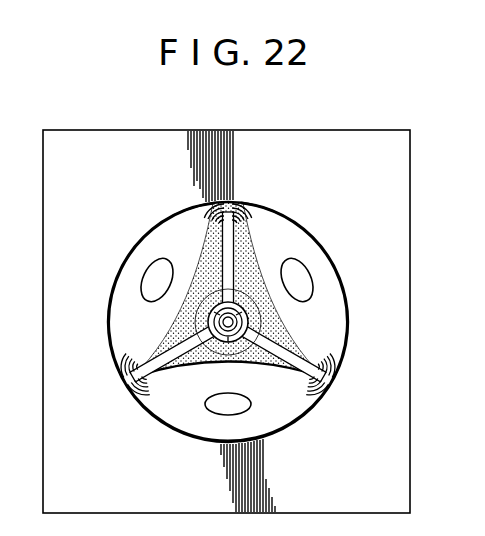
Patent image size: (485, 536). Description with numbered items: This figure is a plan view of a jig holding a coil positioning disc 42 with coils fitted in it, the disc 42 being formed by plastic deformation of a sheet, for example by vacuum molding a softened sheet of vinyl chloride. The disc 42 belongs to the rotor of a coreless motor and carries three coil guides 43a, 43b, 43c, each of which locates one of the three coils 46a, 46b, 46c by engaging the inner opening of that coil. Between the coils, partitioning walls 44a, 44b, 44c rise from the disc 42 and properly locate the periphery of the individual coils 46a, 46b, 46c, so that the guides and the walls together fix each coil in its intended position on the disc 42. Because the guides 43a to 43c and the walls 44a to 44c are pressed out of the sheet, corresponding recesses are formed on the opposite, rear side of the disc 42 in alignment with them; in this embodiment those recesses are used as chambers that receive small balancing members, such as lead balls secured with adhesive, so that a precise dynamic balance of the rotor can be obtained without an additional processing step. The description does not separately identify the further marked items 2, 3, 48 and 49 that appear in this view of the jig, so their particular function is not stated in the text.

The rod arm 2 is at (217, 278).
The stippled web region 3 is at (257, 263).
The coil positioning disc 42 is at (341, 366).
The coil guide 43a is at (300, 278).
The coil guide 43b is at (217, 406).
The coil guide 43c is at (150, 277).
The partitioning wall 44a is at (324, 382).
The partitioning wall 44b is at (130, 381).
The partitioning wall 44c is at (236, 206).
The coil 46a is at (297, 233).
The coil 46b is at (281, 418).
The coil 46c is at (155, 232).
The housing frame 48 is at (320, 139).
The lower arm 49 is at (130, 376).